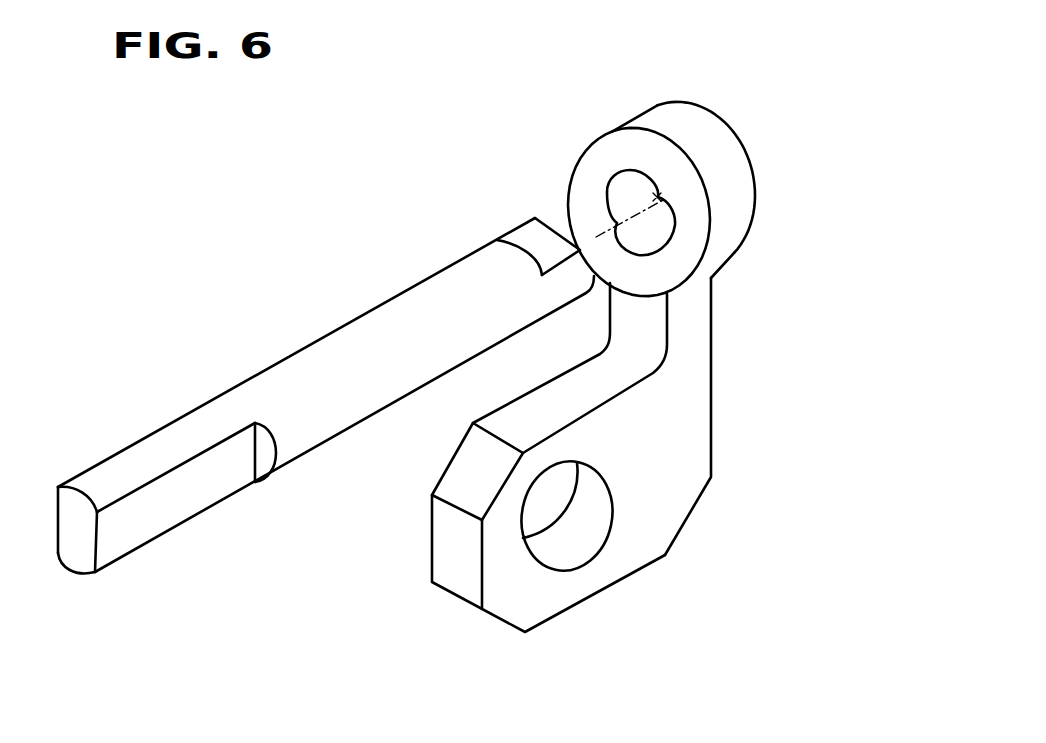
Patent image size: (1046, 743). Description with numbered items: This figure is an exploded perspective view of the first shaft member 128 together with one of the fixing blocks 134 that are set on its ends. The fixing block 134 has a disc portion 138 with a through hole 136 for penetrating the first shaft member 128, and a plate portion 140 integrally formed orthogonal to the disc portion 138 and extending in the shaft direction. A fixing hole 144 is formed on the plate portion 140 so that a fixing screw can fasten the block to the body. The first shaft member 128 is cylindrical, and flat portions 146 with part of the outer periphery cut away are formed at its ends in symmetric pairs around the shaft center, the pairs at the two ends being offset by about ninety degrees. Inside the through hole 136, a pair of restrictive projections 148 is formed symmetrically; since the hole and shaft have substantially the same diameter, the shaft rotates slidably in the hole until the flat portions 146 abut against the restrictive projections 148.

The first shaft member 128 is at (312, 373).
The fixing block 134 is at (690, 400).
The through hole 136 is at (621, 174).
The disc portion 138 is at (698, 143).
The plate portion 140 is at (647, 502).
The fixing hole 144 is at (563, 528).
The flat portions 146 is at (525, 233).
The restrictive projections 148 is at (620, 225).